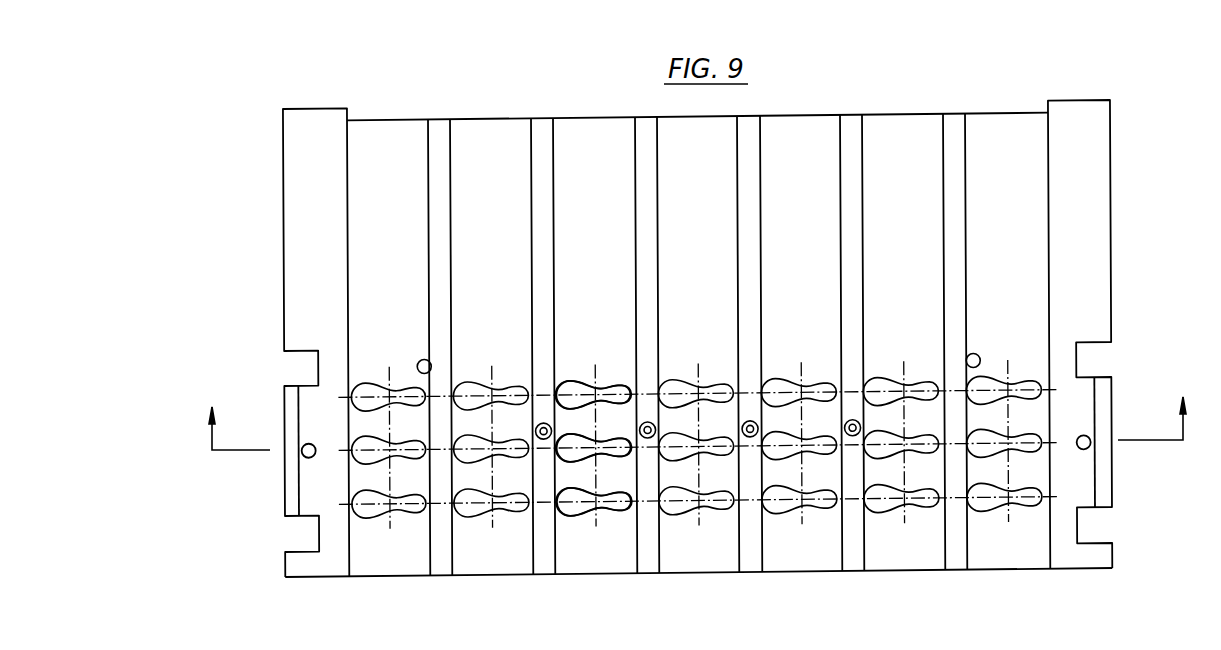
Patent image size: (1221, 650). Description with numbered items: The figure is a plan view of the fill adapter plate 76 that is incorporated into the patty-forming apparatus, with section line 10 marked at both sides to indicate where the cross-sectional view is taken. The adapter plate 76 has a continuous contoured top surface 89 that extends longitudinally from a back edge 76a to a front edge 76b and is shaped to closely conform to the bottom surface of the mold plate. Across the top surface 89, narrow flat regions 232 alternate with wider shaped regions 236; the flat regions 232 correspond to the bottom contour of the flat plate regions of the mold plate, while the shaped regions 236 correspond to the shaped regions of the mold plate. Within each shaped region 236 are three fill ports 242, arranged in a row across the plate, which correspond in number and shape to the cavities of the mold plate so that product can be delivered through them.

The section line 10 is at (700, 414).
The fill adapter plate 76 is at (1113, 295).
The back edge 76a is at (992, 113).
The front edge 76b is at (1012, 577).
The contoured top surface 89 is at (807, 252).
The flat regions 232 is at (849, 113).
The shaped regions 236 is at (783, 125).
The fill ports 242 is at (368, 385).